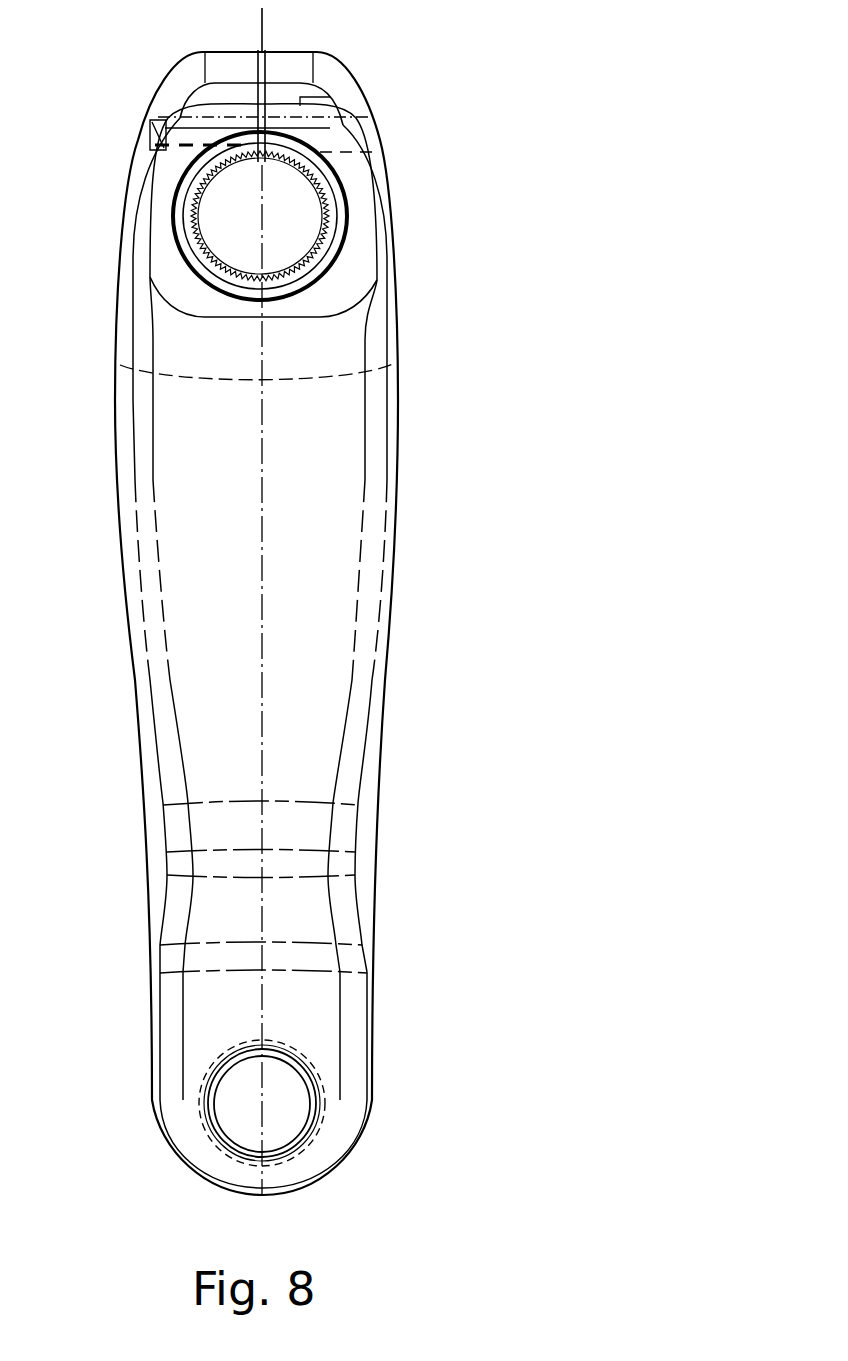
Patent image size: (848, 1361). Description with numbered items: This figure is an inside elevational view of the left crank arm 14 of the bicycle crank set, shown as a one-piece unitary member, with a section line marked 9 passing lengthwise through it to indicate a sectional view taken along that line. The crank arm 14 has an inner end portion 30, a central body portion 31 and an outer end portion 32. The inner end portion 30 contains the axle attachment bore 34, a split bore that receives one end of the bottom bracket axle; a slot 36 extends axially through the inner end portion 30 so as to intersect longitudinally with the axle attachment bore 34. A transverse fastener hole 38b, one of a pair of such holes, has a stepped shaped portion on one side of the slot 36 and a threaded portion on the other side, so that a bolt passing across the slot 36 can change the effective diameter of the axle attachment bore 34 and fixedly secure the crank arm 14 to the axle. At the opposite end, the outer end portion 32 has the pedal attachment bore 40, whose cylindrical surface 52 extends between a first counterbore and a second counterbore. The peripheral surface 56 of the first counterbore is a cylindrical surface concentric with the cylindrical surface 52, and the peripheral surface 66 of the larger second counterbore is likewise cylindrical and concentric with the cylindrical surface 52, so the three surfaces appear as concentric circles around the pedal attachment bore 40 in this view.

The section line 9- 9 is at (262, 8).
The crank arm 14 is at (460, 168).
The inner end portion 30 is at (143, 278).
The central body portion 31 is at (327, 660).
The outer end portion 32 is at (310, 1030).
The axle attachment bore 34 is at (278, 221).
The slot 36 is at (267, 52).
The transverse fastener hole 38b is at (153, 132).
The pedal attachment bore 40 is at (275, 1112).
The cylindrical surface 52 is at (300, 1096).
The peripheral surface 56 is at (305, 1138).
The peripheral surface 66 is at (200, 1113).